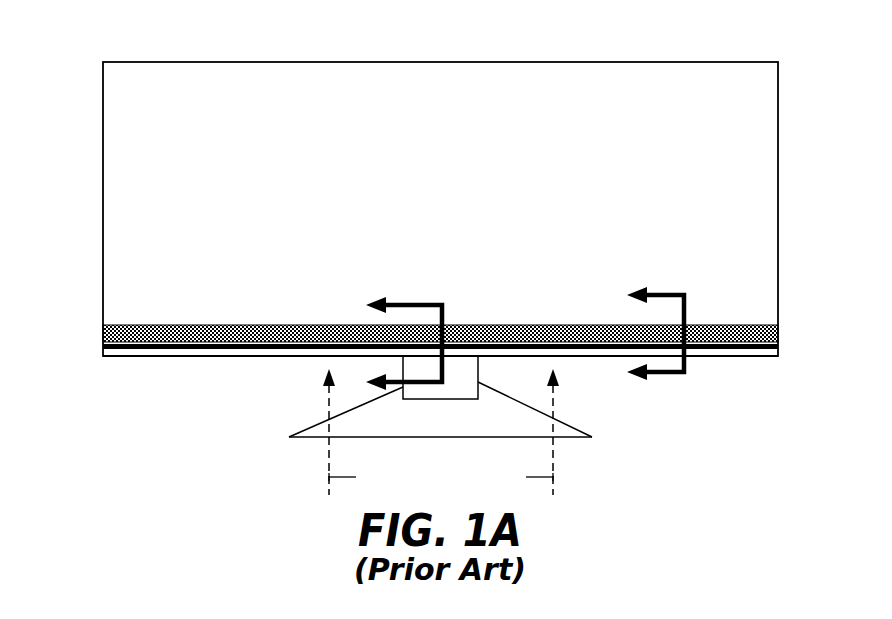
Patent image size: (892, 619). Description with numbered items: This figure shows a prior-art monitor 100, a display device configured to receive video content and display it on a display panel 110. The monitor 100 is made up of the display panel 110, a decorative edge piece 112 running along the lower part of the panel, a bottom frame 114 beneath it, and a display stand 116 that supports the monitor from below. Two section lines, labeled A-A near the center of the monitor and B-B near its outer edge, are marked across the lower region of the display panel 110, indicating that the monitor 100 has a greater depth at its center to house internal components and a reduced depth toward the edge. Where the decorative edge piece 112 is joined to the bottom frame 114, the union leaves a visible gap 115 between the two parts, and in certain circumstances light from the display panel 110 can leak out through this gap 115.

The monitor 100 is at (395, 257).
The display panel 110 is at (122, 62).
The decorative edge piece 112 is at (170, 324).
The bottom frame 114 is at (170, 358).
The gap 115 is at (102, 346).
The display stand 116 is at (308, 428).